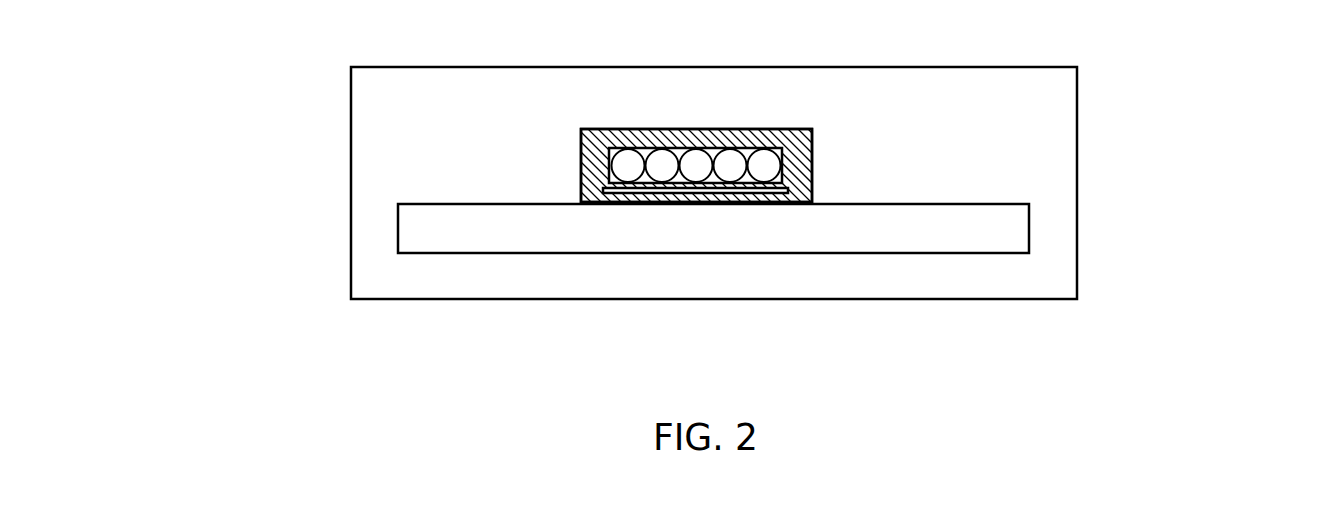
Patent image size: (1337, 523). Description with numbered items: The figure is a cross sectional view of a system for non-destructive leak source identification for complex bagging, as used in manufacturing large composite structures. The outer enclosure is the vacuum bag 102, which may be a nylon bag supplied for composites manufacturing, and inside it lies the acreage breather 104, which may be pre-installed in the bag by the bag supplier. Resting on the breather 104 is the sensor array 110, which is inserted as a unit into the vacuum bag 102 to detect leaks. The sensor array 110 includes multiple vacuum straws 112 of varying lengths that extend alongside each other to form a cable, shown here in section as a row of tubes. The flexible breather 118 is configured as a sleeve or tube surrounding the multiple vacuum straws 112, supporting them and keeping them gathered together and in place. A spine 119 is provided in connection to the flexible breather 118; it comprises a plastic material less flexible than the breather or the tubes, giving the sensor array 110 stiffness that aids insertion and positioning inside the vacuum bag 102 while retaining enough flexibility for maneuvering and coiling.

The vacuum bag 102 is at (371, 73).
The breather 104 is at (395, 232).
The sensor array 110 is at (757, 127).
The vacuum straws 112 is at (692, 148).
The flexible breather 118 is at (816, 166).
The spine 119 is at (648, 194).